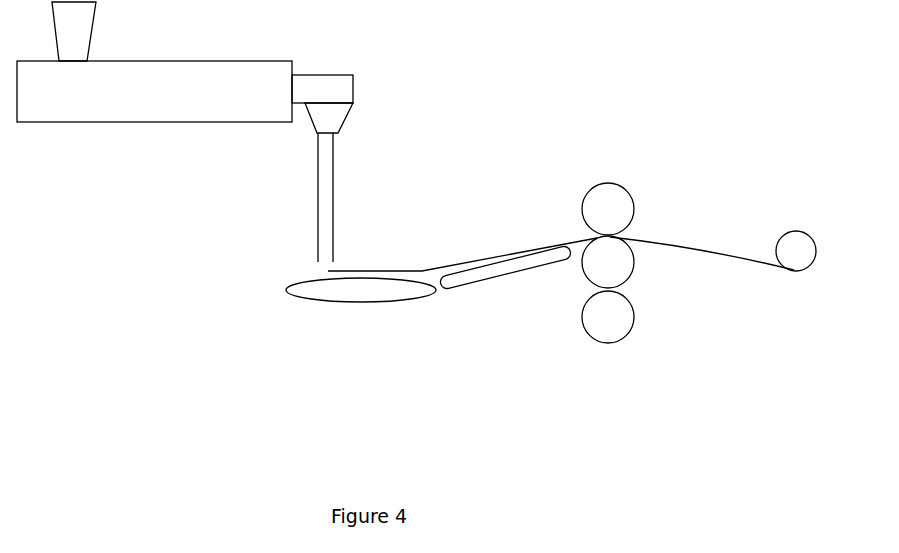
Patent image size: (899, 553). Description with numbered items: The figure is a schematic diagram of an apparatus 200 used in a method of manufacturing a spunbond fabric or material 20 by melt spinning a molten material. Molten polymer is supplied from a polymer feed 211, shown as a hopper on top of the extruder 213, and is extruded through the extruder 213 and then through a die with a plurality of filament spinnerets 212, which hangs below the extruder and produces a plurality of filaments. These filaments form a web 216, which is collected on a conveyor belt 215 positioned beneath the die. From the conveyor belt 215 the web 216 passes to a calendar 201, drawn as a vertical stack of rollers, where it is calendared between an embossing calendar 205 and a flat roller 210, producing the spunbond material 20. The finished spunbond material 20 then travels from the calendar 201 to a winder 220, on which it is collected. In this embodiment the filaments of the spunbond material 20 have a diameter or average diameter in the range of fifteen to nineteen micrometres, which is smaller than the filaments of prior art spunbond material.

The apparatus 200 is at (538, 133).
The calendar 201 is at (592, 348).
The embossing calendar 205 is at (620, 198).
The flat roller 210 is at (620, 267).
The polymer feed 211 is at (75, 28).
The die with a plurality of filament spinnerets 212 is at (342, 122).
The extruder 213 is at (227, 61).
The conveyor belt 215 is at (518, 267).
The web 216 is at (422, 270).
The spunbond material 20 is at (693, 249).
The winder 220 is at (797, 257).